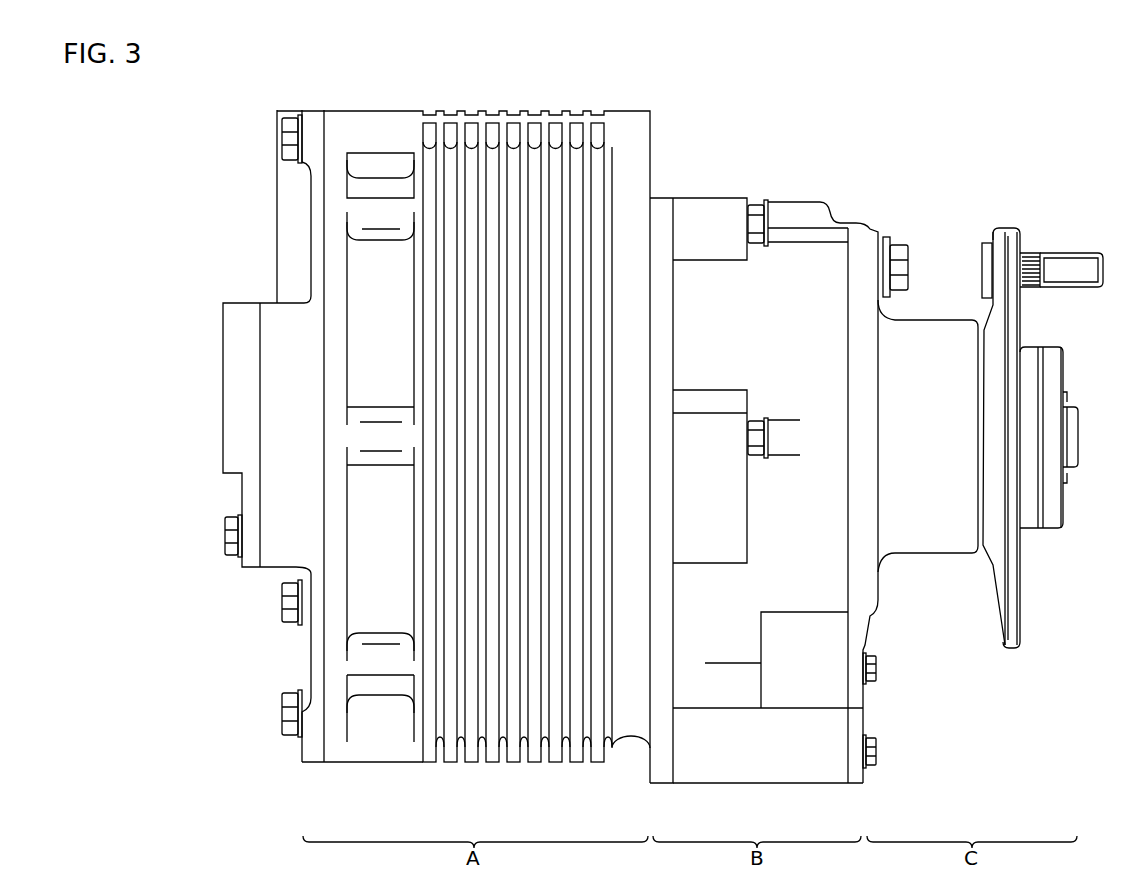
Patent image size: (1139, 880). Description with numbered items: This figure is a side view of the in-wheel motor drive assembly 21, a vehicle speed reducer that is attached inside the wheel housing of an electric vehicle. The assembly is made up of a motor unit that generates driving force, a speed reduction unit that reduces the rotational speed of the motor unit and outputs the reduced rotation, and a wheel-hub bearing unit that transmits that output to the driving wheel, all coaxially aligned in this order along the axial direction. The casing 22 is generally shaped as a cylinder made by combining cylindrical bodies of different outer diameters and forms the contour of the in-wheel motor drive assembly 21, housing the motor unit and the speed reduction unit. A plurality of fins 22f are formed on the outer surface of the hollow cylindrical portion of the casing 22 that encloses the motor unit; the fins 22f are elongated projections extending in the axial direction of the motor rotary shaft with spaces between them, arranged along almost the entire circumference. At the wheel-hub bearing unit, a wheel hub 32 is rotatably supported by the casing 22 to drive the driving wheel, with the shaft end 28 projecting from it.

The in-wheel motor drive assembly 21 is at (274, 106).
The casing 22 is at (436, 447).
The fins 22f is at (461, 765).
The output shaft end 28 is at (1078, 439).
The wheel hub 32 is at (1022, 242).